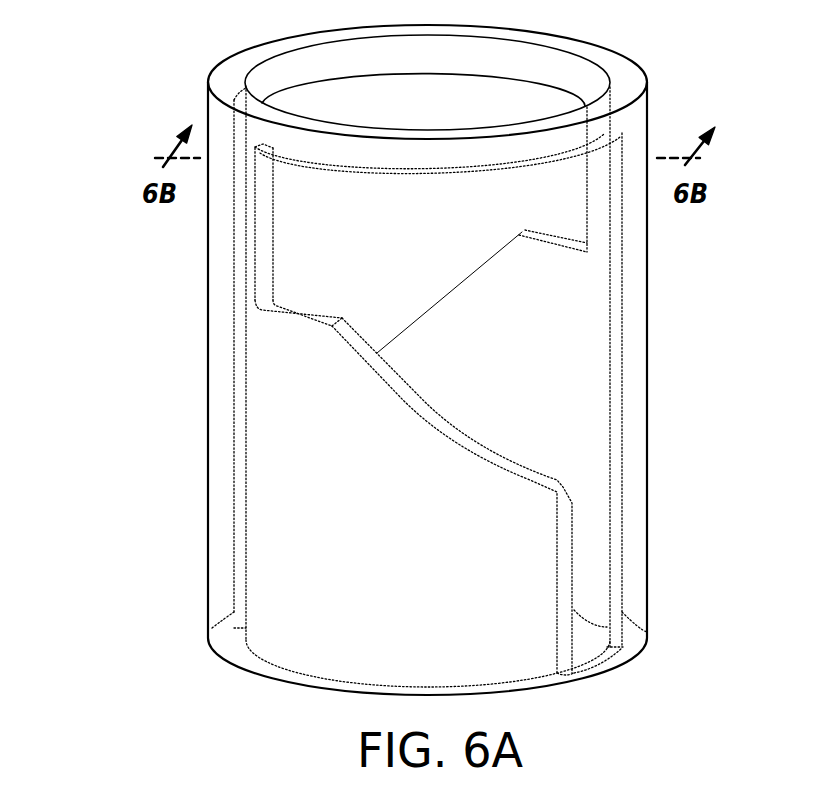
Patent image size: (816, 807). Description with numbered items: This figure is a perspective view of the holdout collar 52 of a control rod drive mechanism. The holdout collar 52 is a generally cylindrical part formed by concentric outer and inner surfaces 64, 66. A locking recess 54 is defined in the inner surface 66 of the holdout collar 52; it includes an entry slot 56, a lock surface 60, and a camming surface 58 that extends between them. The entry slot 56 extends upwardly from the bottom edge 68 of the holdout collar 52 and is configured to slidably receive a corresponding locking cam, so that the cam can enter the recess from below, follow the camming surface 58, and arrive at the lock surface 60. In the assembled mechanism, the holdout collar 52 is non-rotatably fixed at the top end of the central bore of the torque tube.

The holdout collar 52 is at (137, 88).
The locking recess 54 is at (450, 253).
The entry slot 56 is at (576, 690).
The camming surface 58 is at (453, 430).
The lock surface 60 is at (313, 318).
The outer surface 64 is at (207, 385).
The inner surface 66 is at (513, 60).
The bottom edge 68 is at (247, 672).